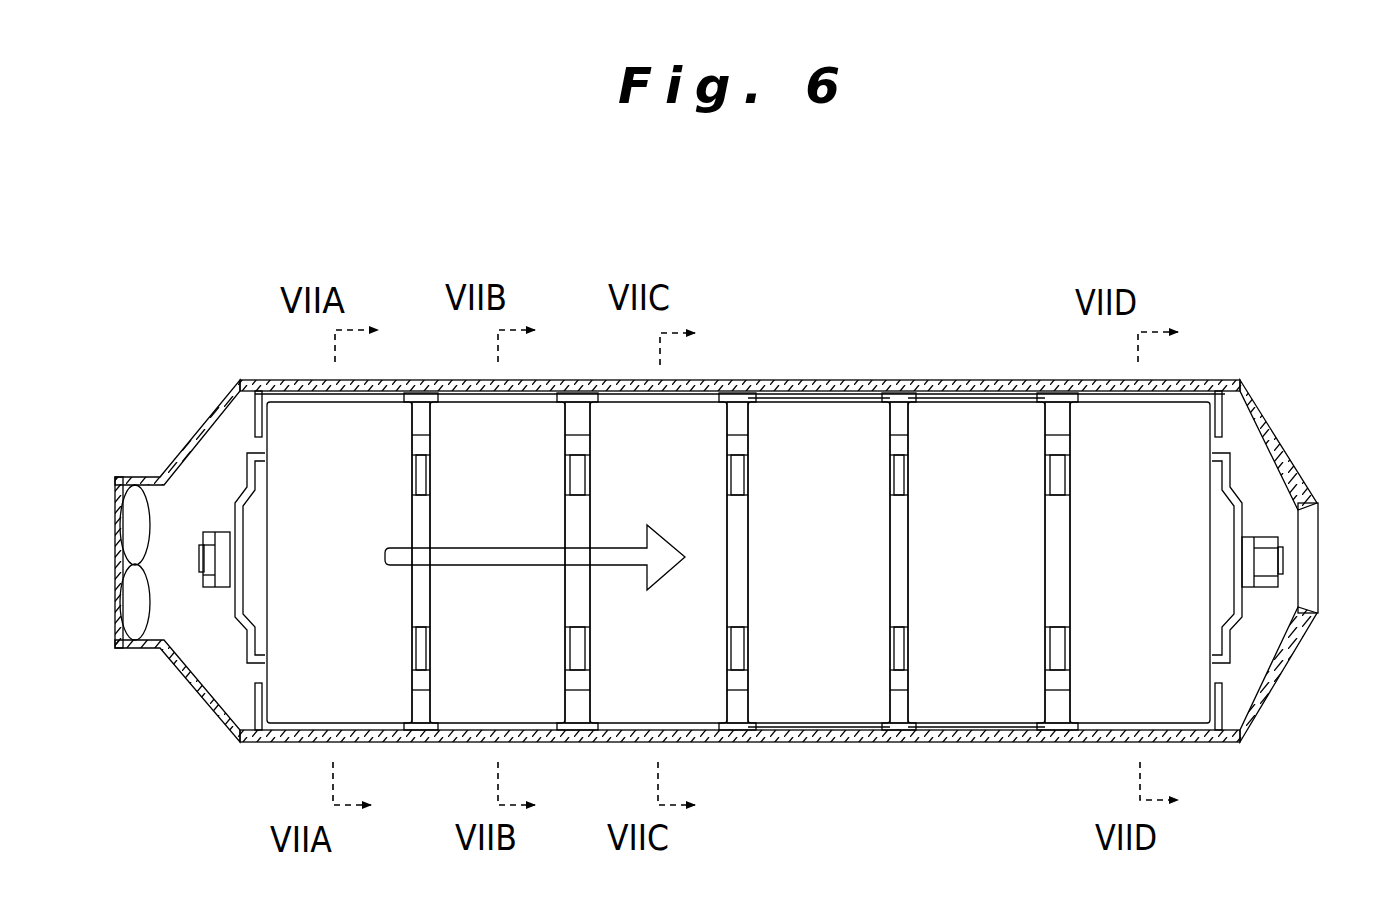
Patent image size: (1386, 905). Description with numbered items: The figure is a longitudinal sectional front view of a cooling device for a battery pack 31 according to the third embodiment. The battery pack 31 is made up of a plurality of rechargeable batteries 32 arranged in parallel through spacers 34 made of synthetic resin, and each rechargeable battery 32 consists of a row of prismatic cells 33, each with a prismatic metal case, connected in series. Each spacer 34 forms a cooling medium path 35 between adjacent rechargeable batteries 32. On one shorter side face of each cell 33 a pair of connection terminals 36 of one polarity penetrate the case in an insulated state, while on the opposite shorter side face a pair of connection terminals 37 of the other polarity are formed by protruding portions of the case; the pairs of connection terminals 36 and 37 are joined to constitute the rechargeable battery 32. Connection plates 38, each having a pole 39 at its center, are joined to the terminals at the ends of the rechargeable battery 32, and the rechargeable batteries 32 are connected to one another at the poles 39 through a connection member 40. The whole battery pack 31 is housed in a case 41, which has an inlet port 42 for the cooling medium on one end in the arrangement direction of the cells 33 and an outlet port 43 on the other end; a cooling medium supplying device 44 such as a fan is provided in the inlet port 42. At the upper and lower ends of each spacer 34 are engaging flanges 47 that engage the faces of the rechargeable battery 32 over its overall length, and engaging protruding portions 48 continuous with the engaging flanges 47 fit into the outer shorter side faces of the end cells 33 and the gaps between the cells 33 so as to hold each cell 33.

The battery pack 31 is at (724, 473).
The rechargeable battery 32 is at (724, 515).
The prismatic cell 33 is at (476, 700).
The spacer 34 is at (753, 385).
The cooling medium path 35 is at (518, 541).
The connection terminal 36 is at (412, 470).
The connection terminal 37 is at (262, 470).
The connection plate 38 is at (243, 515).
The pole 39 is at (200, 565).
The connection member 40 is at (228, 592).
The case 41 is at (893, 398).
The inlet port 42 is at (152, 490).
The outlet port 43 is at (1303, 537).
The cooling medium supplying device 44 is at (137, 602).
The engaging flange 47 is at (843, 397).
The engaging protruding portion 48 is at (926, 413).